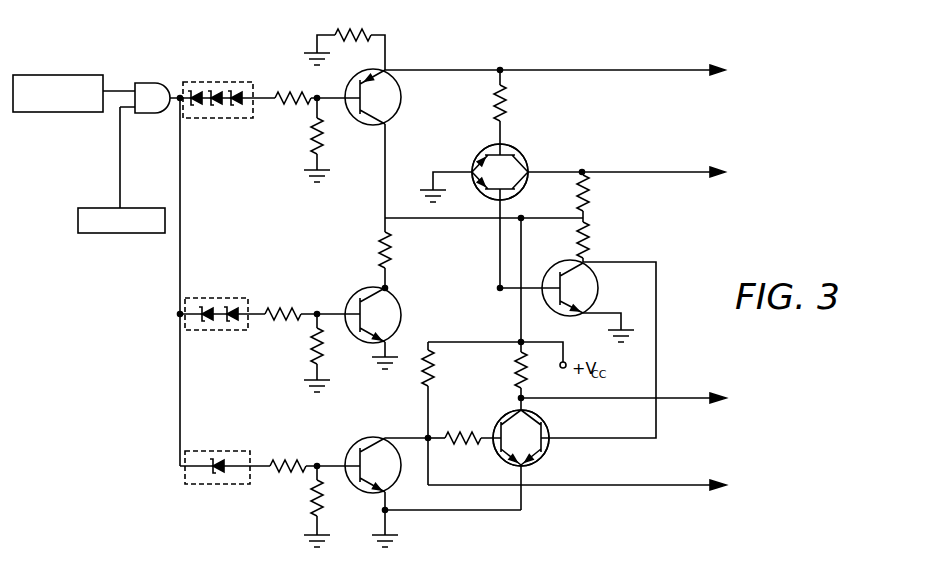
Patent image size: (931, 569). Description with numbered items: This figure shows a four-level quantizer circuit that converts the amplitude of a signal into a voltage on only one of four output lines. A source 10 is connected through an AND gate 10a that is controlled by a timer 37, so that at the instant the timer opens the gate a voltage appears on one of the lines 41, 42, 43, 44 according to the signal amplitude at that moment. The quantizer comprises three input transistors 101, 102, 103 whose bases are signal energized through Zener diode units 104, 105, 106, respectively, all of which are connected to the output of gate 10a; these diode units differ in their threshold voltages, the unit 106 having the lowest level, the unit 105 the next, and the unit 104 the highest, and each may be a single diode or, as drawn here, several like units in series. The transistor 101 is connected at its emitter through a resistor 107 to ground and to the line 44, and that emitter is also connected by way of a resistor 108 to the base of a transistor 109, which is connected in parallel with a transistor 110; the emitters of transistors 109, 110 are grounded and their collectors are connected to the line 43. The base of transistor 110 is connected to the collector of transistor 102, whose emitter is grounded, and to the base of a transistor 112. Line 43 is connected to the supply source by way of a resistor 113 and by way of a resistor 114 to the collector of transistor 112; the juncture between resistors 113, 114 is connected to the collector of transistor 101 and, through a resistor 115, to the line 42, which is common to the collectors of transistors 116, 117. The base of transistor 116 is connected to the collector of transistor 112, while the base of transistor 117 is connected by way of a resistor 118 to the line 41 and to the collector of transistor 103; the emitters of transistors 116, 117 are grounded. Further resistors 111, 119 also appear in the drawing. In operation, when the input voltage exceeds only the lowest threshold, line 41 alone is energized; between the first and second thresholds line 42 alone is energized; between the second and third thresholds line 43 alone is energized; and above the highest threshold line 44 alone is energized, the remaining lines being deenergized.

The source 10 is at (91, 74).
The AND gate 10a is at (163, 116).
The timer 37 is at (160, 233).
The Zener diode unit 104 is at (236, 82).
The Zener diode unit 105 is at (231, 298).
The Zener diode unit 106 is at (233, 451).
The resistor 107 is at (364, 33).
The input transistor 101 is at (398, 107).
The input transistor 102 is at (401, 316).
The input transistor 103 is at (363, 441).
The resistor 108 is at (506, 103).
The transistor 109 is at (512, 147).
The transistor 110 is at (519, 192).
The resistor 111 is at (393, 254).
The transistor 112 is at (594, 285).
The resistor 113 is at (592, 190).
The resistor 114 is at (593, 249).
The resistor 115 is at (516, 373).
The transistor 116 is at (547, 430).
The transistor 117 is at (497, 430).
The resistor 118 is at (473, 447).
The resistor 119 is at (425, 382).
The line 41 is at (665, 485).
The line 42 is at (671, 398).
The line 43 is at (661, 172).
The line 44 is at (660, 70).